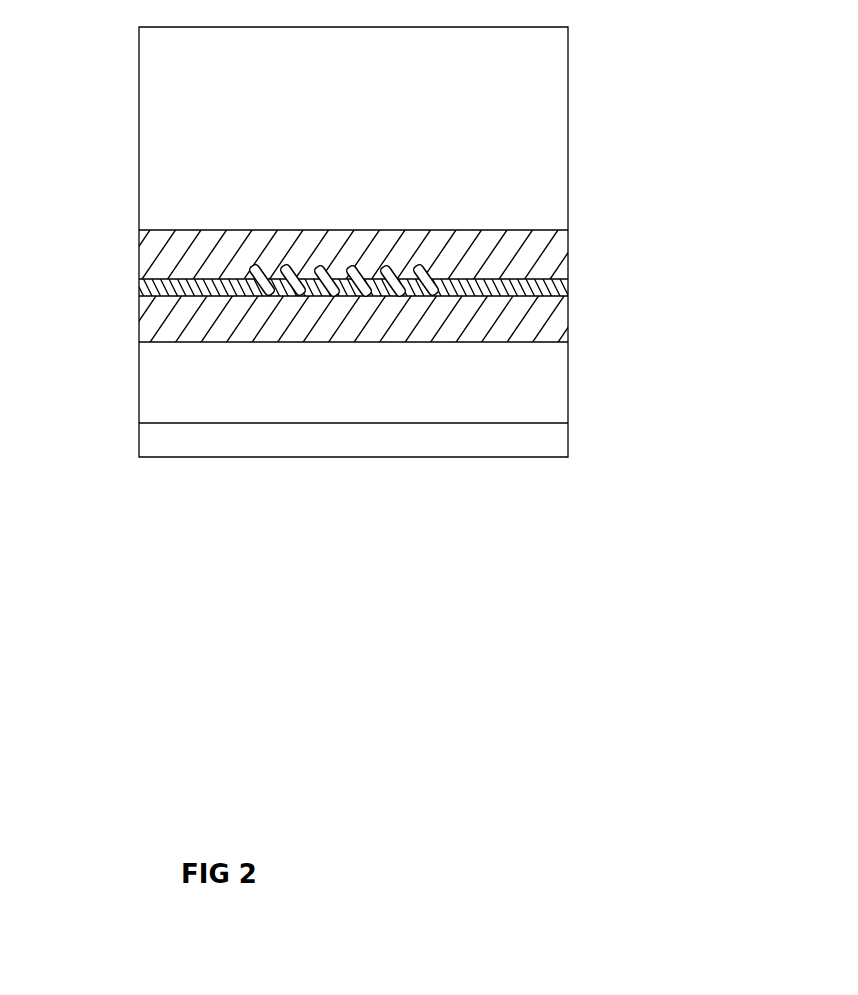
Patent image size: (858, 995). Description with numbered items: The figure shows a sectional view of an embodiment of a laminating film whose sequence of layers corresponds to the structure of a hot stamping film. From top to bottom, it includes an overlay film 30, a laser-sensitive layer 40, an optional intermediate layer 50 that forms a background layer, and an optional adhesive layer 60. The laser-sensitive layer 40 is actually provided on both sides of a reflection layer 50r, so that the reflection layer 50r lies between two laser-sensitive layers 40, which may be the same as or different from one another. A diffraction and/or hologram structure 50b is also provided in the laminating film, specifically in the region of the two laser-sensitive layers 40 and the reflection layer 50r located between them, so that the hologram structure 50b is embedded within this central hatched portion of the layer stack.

The overlay film 30 is at (518, 144).
The laser-sensitive layer 40 is at (553, 256).
The reflection layer 50r is at (563, 290).
The diffraction and/or hologram structure 50b is at (340, 297).
The intermediate layer 50 is at (520, 383).
The adhesive layer 60 is at (520, 439).